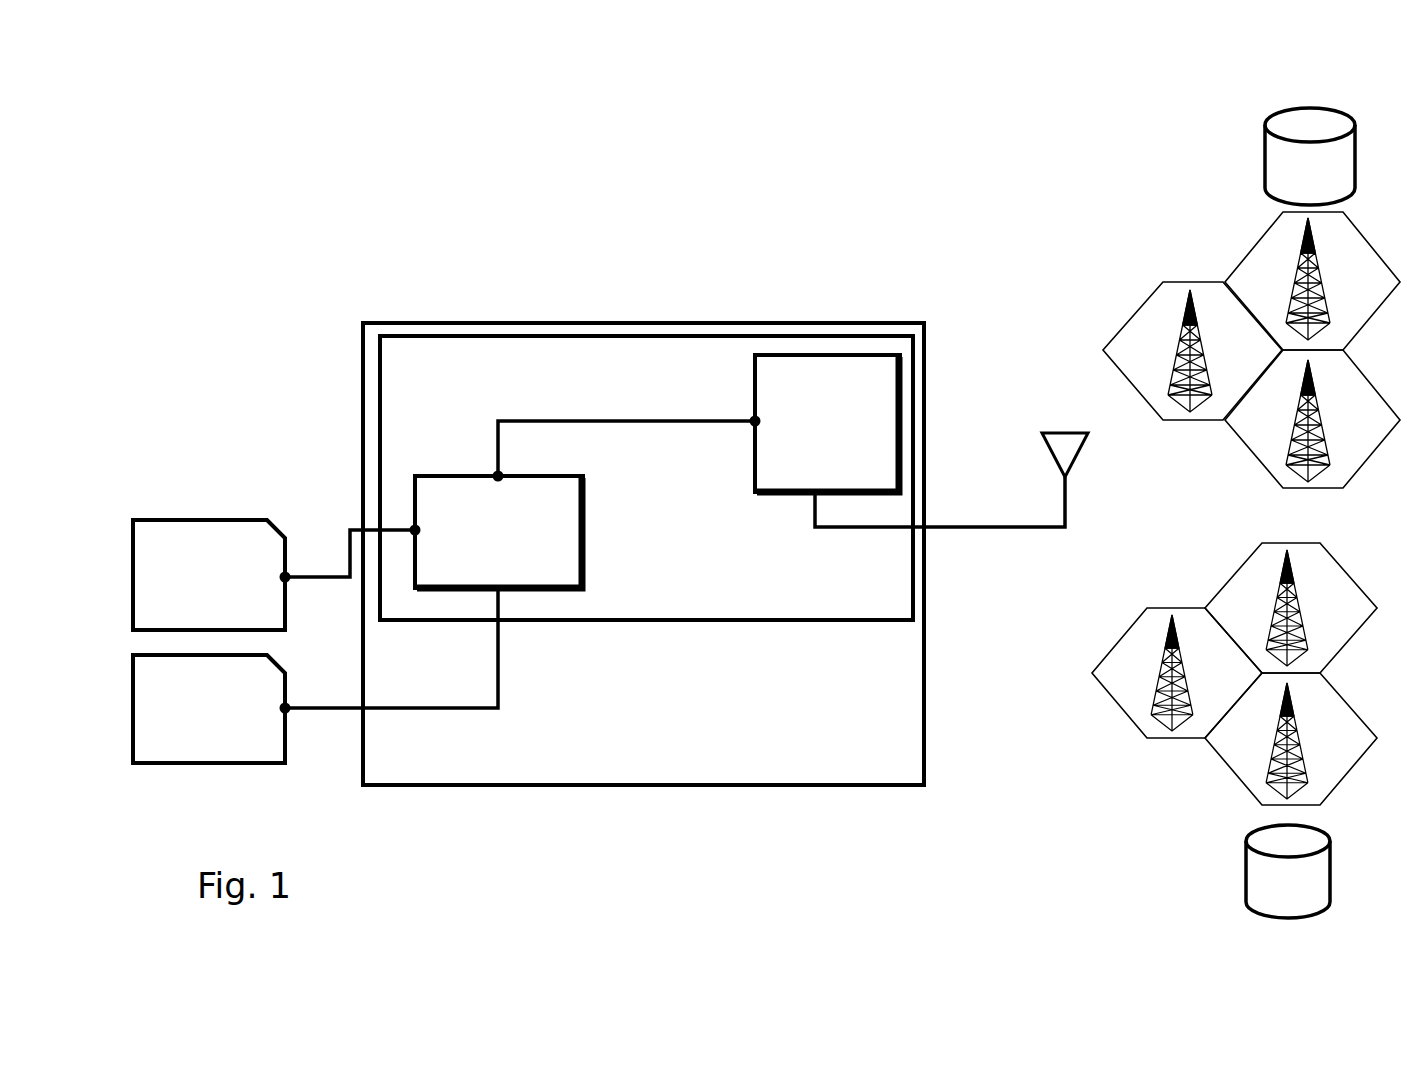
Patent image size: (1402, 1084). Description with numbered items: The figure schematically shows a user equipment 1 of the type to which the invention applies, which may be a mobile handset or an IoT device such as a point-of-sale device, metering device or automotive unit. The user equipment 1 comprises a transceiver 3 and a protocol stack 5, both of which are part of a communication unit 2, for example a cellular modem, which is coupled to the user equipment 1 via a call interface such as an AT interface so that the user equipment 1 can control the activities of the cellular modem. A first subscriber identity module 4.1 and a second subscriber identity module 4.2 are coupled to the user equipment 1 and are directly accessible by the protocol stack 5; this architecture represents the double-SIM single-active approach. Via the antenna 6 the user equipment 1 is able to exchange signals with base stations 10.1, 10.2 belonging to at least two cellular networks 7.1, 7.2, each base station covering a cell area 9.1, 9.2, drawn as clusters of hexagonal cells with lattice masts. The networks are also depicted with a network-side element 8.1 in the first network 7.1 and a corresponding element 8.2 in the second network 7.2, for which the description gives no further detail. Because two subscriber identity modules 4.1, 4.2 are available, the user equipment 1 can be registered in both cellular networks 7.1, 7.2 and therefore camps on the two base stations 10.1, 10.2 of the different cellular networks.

The user equipment 1 is at (643, 554).
The communication unit 2 is at (646, 478).
The transceiver 3 is at (827, 423).
The first subscriber identity module 4.1 is at (209, 575).
The second subscriber identity module 4.2 is at (209, 709).
The protocol stack 5 is at (499, 532).
The antenna 6 is at (1072, 417).
The first cellular network 7.1 is at (1197, 299).
The second cellular network 7.2 is at (1163, 706).
The first network server 8.1 is at (1290, 168).
The second network server 8.2 is at (1278, 883).
The first cell area 9.1 is at (1265, 418).
The second cell area 9.2 is at (1247, 737).
The first base station 10.1 is at (1300, 418).
The second base station 10.2 is at (1280, 602).